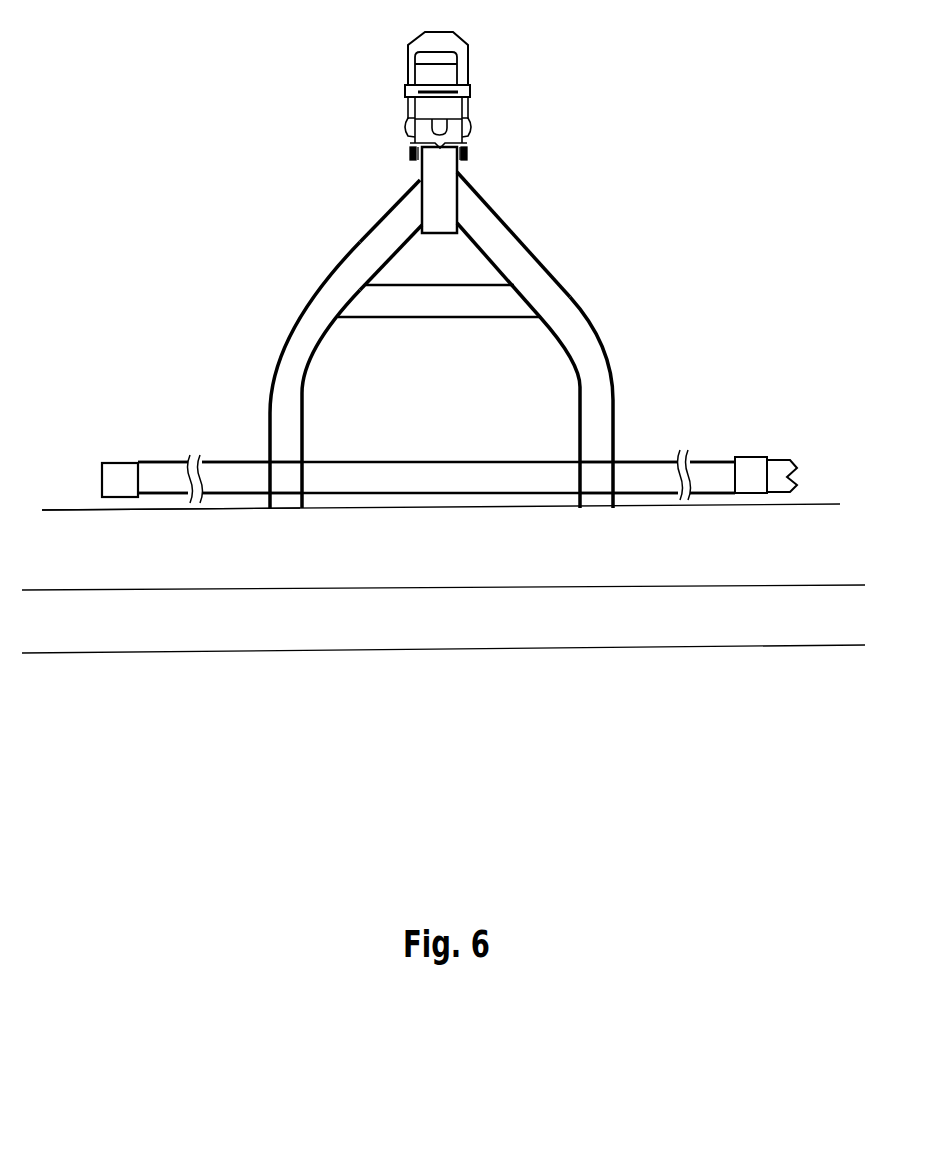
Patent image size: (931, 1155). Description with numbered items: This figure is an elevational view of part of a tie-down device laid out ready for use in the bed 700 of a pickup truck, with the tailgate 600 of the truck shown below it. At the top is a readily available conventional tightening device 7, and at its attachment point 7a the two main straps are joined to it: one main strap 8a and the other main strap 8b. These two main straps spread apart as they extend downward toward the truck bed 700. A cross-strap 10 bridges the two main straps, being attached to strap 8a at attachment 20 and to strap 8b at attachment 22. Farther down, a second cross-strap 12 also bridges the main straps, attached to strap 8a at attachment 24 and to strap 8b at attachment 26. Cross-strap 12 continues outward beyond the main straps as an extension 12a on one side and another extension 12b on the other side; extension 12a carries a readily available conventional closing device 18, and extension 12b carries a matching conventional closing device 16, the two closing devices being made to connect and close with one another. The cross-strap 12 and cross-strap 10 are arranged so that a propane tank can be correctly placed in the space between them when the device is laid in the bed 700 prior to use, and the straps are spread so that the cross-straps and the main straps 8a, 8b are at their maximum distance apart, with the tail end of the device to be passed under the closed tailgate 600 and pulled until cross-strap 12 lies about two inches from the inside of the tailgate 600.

The tightening device 7 is at (470, 78).
The attachment point 7a is at (470, 153).
The main strap 8a is at (510, 222).
The main strap 8b is at (357, 233).
The cross-strap 10 is at (442, 322).
The cross-strap 12 is at (442, 456).
The extension of strap 12a is at (710, 454).
The extension of strap 12b is at (157, 457).
The closing device 16 is at (108, 458).
The closing device 18 is at (745, 452).
The attachment 20 is at (572, 293).
The attachment 22 is at (305, 297).
The attachment 24 is at (618, 455).
The attachment 26 is at (265, 460).
The tailgate 600 is at (523, 568).
The bed 700 is at (148, 282).